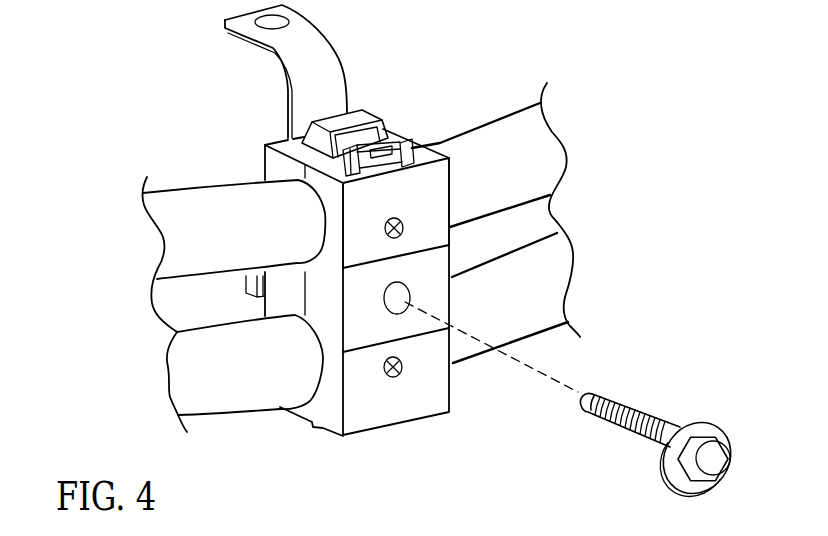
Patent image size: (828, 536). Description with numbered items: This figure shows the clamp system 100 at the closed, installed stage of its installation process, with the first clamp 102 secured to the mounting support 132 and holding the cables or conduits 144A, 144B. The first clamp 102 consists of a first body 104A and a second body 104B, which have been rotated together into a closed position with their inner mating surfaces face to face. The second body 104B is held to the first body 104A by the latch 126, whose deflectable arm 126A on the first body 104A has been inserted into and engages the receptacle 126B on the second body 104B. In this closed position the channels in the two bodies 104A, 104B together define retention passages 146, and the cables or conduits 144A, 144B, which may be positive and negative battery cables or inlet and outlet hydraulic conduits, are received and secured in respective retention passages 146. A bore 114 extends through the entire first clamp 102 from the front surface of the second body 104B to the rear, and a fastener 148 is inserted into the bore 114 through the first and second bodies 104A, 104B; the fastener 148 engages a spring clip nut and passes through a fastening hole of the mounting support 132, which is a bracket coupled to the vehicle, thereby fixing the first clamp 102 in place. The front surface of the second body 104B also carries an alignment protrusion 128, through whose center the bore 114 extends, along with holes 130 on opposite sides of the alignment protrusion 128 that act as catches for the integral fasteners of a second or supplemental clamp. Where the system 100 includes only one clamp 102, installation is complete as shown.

The clamp system 100 is at (180, 89).
The first clamp 102 is at (362, 434).
The first body 104A is at (273, 158).
The second body 104B is at (423, 152).
The bore 114 is at (404, 310).
The latch 126 is at (322, 168).
The deflectable arm 126A is at (397, 162).
The receptacle 126B is at (390, 142).
The alignment protrusion 128 is at (440, 287).
The holes 130 is at (408, 233).
The mounting support 132 is at (315, 80).
The first cable or conduit 144A is at (512, 140).
The second cable or conduit 144B is at (537, 317).
The retention passages 146 is at (318, 224).
The fastener 148 is at (658, 425).